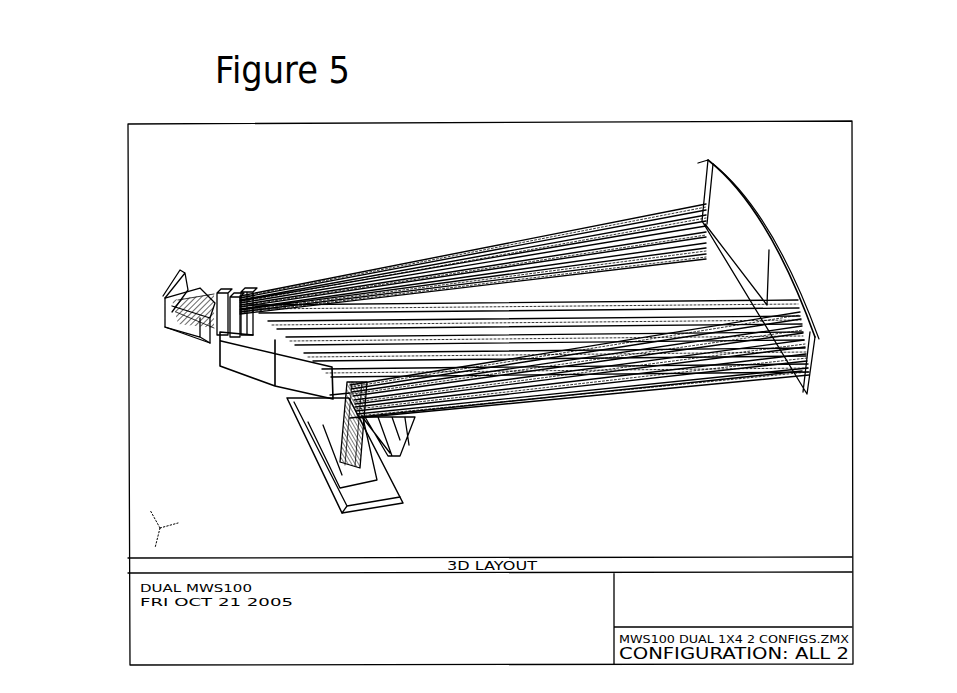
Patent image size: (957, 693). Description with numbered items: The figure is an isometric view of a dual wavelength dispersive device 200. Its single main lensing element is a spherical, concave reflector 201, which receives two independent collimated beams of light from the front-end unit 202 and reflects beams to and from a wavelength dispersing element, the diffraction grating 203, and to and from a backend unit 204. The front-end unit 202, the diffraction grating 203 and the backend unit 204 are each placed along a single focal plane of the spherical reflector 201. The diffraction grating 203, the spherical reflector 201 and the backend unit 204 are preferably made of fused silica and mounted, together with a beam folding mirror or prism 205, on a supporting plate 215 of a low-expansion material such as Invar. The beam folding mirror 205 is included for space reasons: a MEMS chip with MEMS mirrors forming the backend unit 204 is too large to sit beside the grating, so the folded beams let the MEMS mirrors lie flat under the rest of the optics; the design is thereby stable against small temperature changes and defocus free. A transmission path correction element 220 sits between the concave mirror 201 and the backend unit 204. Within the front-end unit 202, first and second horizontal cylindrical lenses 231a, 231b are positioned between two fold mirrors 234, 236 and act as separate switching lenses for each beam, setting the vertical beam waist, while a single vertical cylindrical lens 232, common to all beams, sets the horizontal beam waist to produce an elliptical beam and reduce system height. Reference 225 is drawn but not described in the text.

The dual wavelength dispersive device 200 is at (548, 165).
The spherical reflector 201 is at (723, 175).
The front-end unit 202 is at (150, 298).
The diffraction grating 203 is at (243, 362).
The backend unit 204 is at (280, 488).
The beam folding mirror or prism 205 is at (312, 421).
The supporting plate 215 is at (699, 423).
The transmission path correction element 220 is at (407, 435).
The detector board 225 is at (377, 478).
The first horizontal cylindrical lens 231a is at (203, 308).
The second horizontal cylindrical lens 231b is at (232, 292).
The vertical cylindrical lens 232 is at (250, 300).
The fold mirror 234 is at (180, 280).
The fold mirror 236 is at (202, 333).